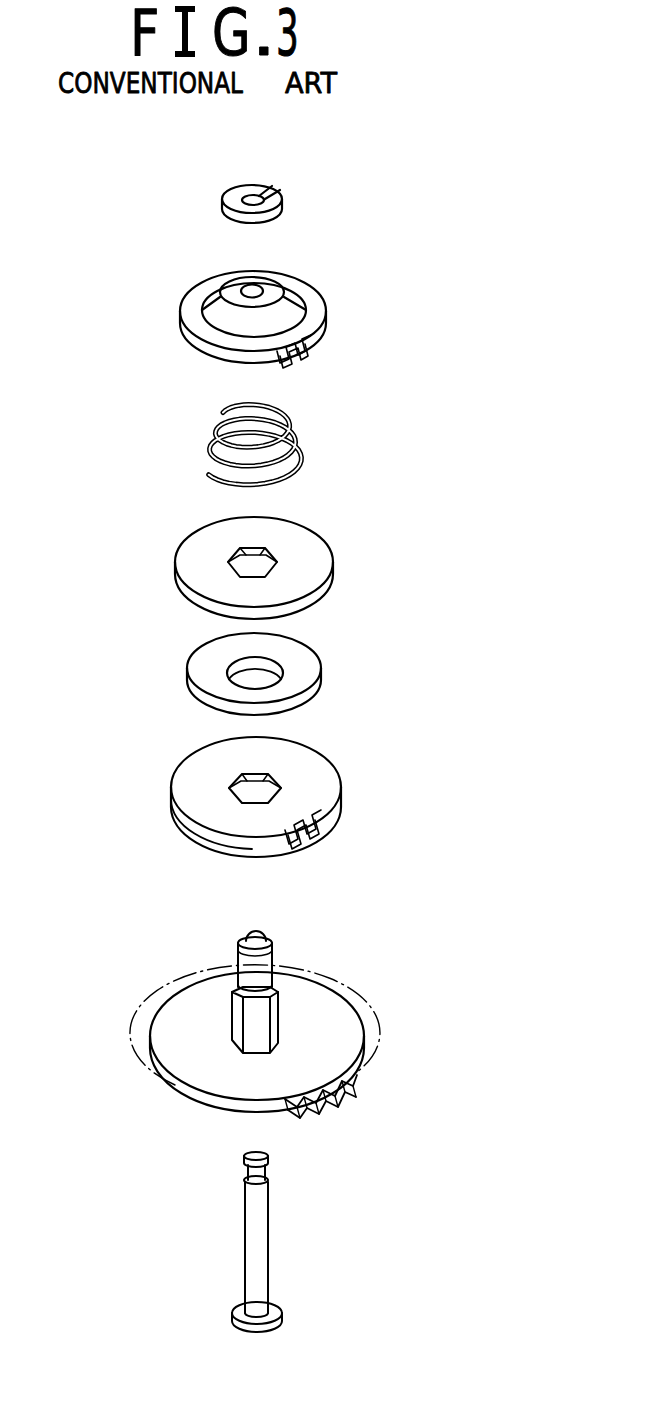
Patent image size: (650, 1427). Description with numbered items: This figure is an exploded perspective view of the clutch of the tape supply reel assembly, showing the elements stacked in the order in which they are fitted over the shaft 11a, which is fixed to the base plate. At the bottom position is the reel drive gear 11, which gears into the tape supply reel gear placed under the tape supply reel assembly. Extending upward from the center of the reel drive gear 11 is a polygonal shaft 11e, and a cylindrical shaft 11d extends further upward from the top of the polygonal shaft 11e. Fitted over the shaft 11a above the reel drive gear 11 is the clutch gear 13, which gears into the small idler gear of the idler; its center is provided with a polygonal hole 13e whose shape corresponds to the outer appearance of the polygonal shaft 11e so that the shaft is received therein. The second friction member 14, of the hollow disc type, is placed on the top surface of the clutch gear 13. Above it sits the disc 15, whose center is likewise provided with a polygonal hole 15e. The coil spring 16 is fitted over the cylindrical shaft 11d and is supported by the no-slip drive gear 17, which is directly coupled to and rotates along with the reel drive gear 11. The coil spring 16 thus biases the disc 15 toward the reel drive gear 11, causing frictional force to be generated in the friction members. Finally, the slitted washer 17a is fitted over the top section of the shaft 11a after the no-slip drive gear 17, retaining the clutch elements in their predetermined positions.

The reel drive gear 11 is at (362, 1040).
The shaft 11a is at (268, 1228).
The cylindrical shaft 11d is at (263, 960).
The polygonal shaft 11e is at (270, 1012).
The clutch gear 13 is at (320, 810).
The polygonal hole 13e is at (276, 789).
The second friction member 14 is at (293, 692).
The disc 15 is at (310, 578).
The polygonal hole 15e is at (272, 563).
The coil spring 16 is at (307, 450).
The no-slip drive gear 17 is at (327, 330).
The slitted washer 17a is at (282, 210).